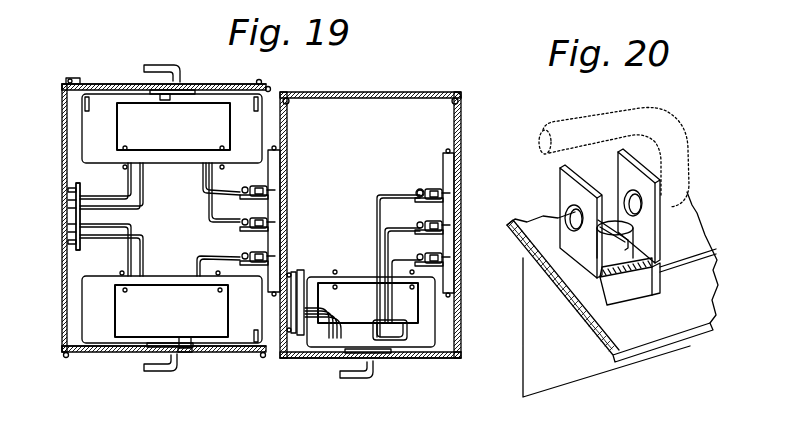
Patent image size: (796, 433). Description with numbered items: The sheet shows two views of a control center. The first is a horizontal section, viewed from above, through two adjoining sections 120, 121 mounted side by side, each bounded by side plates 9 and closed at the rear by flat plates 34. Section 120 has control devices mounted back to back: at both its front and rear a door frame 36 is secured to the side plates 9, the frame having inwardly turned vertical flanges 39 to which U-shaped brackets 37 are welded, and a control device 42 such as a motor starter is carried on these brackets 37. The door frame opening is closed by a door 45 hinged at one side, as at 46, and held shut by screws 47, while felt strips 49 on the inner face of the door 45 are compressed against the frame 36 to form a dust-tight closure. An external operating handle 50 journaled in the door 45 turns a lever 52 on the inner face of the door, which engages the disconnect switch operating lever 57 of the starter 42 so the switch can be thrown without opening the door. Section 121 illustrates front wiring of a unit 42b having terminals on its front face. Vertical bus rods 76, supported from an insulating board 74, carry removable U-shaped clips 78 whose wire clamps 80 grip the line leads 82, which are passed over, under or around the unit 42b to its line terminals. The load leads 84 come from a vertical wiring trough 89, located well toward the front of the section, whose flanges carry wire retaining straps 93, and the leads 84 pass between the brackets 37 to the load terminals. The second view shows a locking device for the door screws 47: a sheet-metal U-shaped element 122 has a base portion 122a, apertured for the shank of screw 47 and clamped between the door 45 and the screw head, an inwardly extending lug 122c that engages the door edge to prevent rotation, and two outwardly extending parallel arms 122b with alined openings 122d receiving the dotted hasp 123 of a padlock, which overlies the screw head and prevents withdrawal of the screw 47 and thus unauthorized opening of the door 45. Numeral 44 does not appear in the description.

In FIG. 19, the side plate 9 is at (62, 153).
In FIG. 19, the flat plate 34 is at (418, 92).
In FIG. 19, the door frame 36 is at (62, 88).
In FIG. 19, the U-shaped bracket 37 is at (82, 125).
In FIG. 19, the vertical flange 39 is at (90, 108).
In FIG. 19, the control device 42 is at (172, 220).
In FIG. 19, the unit 42b is at (368, 311).
In FIG. 19, the hinge 44 is at (68, 84).
In FIG. 19, the door 45 is at (118, 84).
In FIG. 20, the door 45 is at (562, 272).
In FIG. 19, the hinge 46 is at (67, 356).
In FIG. 19, the screw 47 is at (263, 357).
In FIG. 20, the screw 47 is at (633, 245).
In FIG. 19, the strip of resilient material 49 is at (256, 100).
In FIG. 19, the external operating handle 50 is at (156, 66).
In FIG. 19, the lever 52 is at (186, 353).
In FIG. 19, the disconnect switch operating lever 57 is at (187, 338).
In FIG. 19, the insulating board 74 is at (282, 152).
In FIG. 19, the vertical bus rod 76 is at (268, 222).
In FIG. 19, the U-shaped clip 78 is at (243, 224).
In FIG. 19, the wire clamp 80 is at (418, 192).
In FIG. 19, the wire lead 82 is at (200, 210).
In FIG. 19, the lead wire 84 is at (150, 242).
In FIG. 19, the wiring trough 89 is at (74, 186).
In FIG. 19, the wire retaining strap 93 is at (82, 196).
In FIG. 19, the section 120 is at (206, 84).
In FIG. 19, the section 121 is at (374, 92).
In FIG. 20, the U-shaped element 122 is at (626, 242).
In FIG. 20, the base portion 122a is at (658, 290).
In FIG. 20, the outwardly extending parallel arm 122b is at (620, 171).
In FIG. 20, the inwardly extending lug 122c is at (632, 296).
In FIG. 20, the alined opening 122d is at (560, 205).
In FIG. 20, the hasp 123 is at (663, 122).